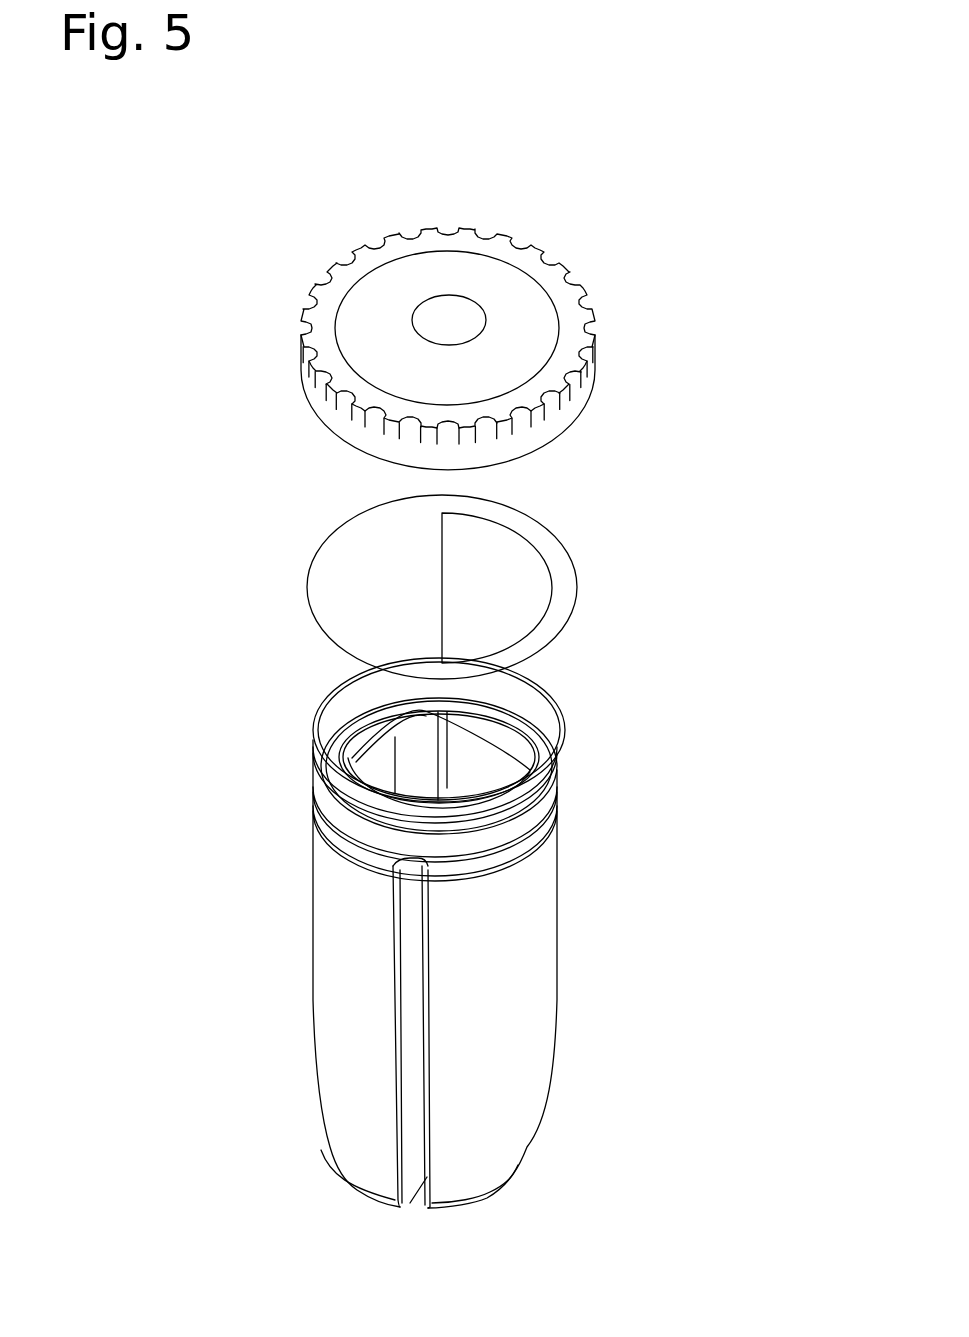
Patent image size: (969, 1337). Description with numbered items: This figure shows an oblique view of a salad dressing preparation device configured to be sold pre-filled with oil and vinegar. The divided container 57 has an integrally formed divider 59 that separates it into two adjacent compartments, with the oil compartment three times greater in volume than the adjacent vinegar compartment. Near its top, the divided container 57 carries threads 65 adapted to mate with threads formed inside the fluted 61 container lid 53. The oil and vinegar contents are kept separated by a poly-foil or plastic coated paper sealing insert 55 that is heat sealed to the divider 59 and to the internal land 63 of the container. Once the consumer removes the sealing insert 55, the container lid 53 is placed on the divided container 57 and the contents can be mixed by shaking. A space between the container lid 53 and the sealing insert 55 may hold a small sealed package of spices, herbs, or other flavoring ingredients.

The container lid 53 is at (530, 284).
The fluted 61 is at (585, 288).
The sealing insert 55 is at (561, 522).
The internal land 63 is at (555, 587).
The divided container 57 is at (472, 883).
The divider 59 is at (447, 752).
The threads 65 is at (335, 786).